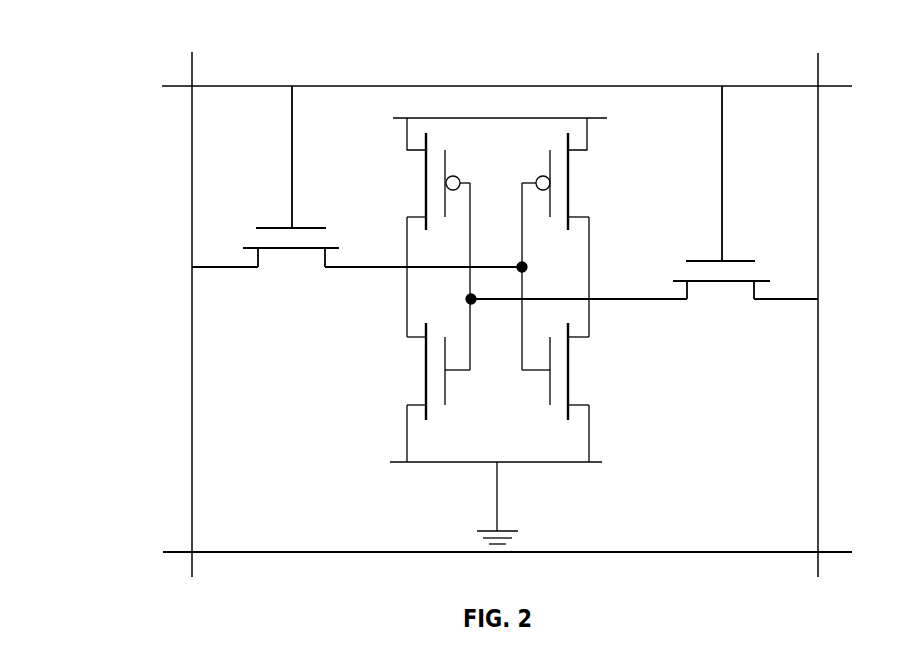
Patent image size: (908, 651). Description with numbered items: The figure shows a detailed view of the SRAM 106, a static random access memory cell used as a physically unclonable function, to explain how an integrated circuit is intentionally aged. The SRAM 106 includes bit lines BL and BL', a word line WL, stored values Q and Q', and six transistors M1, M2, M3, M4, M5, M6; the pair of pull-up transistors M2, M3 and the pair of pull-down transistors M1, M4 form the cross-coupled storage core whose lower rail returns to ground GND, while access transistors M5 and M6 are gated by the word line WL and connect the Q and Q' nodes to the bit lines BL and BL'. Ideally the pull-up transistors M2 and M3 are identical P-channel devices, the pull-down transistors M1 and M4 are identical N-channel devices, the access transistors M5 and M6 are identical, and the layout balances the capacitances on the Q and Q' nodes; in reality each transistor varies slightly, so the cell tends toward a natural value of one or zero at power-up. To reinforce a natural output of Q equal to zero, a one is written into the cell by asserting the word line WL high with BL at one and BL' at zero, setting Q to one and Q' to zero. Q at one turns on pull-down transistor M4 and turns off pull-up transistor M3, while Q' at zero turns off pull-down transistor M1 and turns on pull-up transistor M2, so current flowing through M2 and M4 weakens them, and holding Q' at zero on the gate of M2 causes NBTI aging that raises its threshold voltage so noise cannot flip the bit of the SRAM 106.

The SRAM 106 is at (79, 49).
The word line WL is at (497, 86).
The bit line BL is at (160, 314).
The bit line BL' is at (853, 315).
The stored value Q is at (426, 295).
The stored value Q' is at (576, 325).
The pull down transistor M1 is at (426, 372).
The pull up transistor M2 is at (426, 186).
The pull up transistor M3 is at (568, 185).
The pull down transistor M4 is at (568, 377).
The access transistor M5 is at (288, 249).
The access transistor M6 is at (722, 282).
The ground GND is at (523, 536).